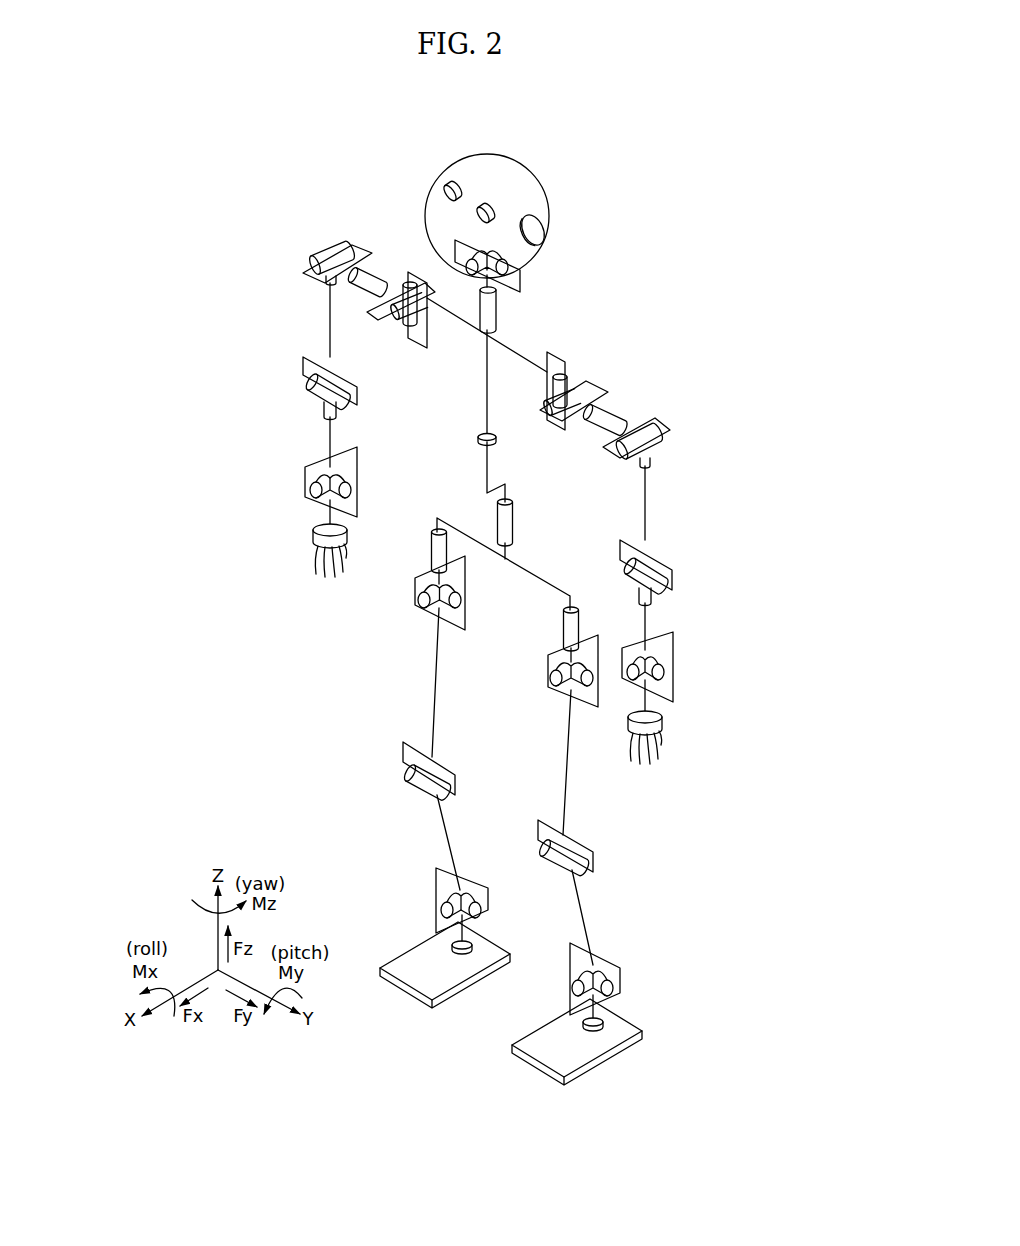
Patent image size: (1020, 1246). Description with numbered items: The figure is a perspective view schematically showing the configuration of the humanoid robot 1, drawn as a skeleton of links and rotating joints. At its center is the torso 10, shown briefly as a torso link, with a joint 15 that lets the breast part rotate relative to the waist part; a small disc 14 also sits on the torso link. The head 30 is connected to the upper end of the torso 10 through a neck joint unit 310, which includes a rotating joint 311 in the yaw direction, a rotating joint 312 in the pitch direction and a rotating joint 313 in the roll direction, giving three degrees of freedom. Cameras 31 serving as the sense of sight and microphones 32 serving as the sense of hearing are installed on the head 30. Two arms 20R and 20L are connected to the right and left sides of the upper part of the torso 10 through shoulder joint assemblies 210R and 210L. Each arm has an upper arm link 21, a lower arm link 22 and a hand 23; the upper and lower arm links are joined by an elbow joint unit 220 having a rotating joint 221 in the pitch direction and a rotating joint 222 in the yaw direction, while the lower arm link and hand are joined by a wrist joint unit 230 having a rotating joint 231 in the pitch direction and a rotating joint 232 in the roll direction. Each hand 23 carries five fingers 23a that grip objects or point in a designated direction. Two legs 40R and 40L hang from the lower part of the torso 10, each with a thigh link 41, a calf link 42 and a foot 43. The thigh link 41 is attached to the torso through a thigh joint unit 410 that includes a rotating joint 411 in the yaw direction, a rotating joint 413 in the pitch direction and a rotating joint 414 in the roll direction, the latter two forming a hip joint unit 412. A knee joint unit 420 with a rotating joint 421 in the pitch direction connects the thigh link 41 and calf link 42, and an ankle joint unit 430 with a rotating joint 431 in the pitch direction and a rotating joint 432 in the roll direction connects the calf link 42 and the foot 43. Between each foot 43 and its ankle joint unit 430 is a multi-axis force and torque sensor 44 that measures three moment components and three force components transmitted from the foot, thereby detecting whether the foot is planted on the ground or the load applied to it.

The humanoid robot 1 is at (740, 172).
The torso 10 is at (485, 405).
The waist joint 14 is at (496, 440).
The joint 15 is at (510, 520).
The right arm 20R is at (238, 376).
The left arm 20L is at (718, 552).
The upper arm link 21 is at (328, 313).
The lower arm link 22 is at (328, 427).
The hand 23 is at (313, 544).
The fingers 23a is at (325, 570).
The head 30 is at (546, 168).
The cameras 31 is at (476, 220).
The microphones 32 is at (540, 233).
The right leg 40R is at (352, 718).
The left leg 40L is at (620, 800).
The thigh link 41 is at (432, 691).
The calf link 42 is at (447, 840).
The foot 43 is at (398, 990).
The multi-axis force and torque sensor 44 is at (468, 952).
The right shoulder joint assembly 210R is at (330, 240).
The left shoulder joint assembly 210L is at (614, 376).
The elbow joint unit 220 is at (298, 360).
The rotating joint in the pitch direction 221 is at (333, 388).
The rotating joint in the yaw direction 222 is at (340, 412).
The wrist joint unit 230 is at (300, 498).
The rotating joint in the pitch direction 231 is at (350, 490).
The rotating joint in the roll direction 232 is at (348, 470).
The neck joint unit 310 is at (548, 284).
The rotating joint in the yaw direction 311 is at (492, 312).
The rotating joint in the pitch direction 312 is at (512, 262).
The rotating joint in the roll direction 313 is at (468, 262).
The thigh joint unit 410 is at (403, 597).
The rotating joint in the yaw direction 411 is at (433, 550).
The hip joint unit 412 is at (450, 616).
The rotating joint in the pitch direction 413 is at (462, 600).
The rotating joint in the roll direction 414 is at (424, 606).
The knee joint unit 420 is at (398, 791).
The rotating joint in the pitch direction 421 is at (433, 780).
The ankle joint unit 430 is at (425, 898).
The rotating joint in the pitch direction 431 is at (480, 912).
The rotating joint in the roll direction 432 is at (466, 889).